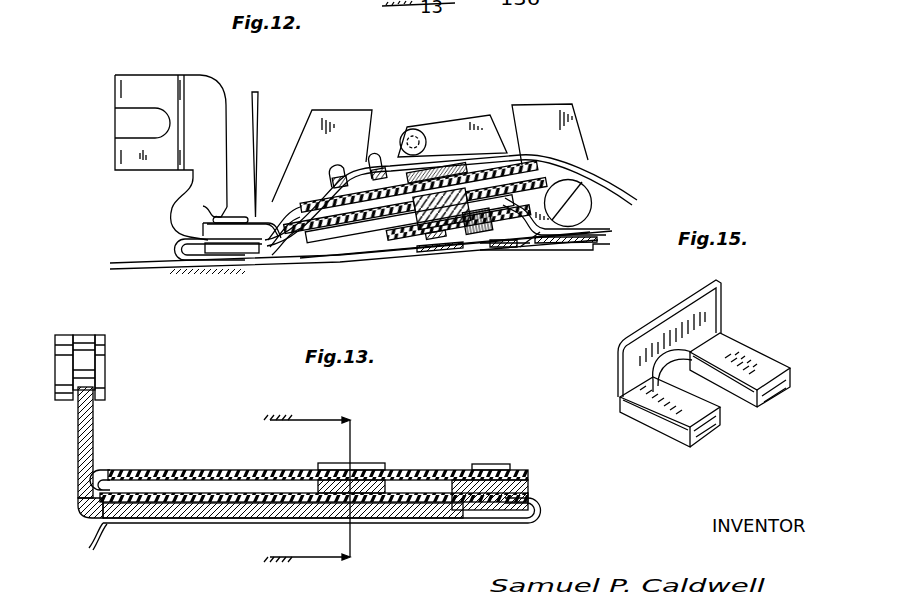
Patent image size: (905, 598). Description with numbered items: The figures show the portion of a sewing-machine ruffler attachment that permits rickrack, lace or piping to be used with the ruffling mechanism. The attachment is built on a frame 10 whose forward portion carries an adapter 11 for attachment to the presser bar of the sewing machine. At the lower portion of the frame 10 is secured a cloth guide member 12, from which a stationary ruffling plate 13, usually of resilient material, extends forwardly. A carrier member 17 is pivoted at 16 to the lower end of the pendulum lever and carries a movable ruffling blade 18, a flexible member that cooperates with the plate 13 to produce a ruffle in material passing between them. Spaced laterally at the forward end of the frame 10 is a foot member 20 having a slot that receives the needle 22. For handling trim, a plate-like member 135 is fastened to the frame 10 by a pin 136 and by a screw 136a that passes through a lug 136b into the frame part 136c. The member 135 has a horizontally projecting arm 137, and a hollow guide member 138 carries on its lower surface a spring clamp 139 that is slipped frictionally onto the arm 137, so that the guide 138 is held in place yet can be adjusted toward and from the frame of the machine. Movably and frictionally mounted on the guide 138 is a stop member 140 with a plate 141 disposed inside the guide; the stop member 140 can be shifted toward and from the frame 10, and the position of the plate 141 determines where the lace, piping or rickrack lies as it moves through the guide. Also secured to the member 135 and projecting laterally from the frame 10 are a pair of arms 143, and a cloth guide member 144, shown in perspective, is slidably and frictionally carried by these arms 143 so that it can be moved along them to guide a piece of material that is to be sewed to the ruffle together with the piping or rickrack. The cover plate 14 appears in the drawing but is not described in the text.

In FIG. 12, the frame 10 is at (335, 118).
In FIG. 12, the adapter 11 is at (127, 94).
In FIG. 12, the cloth guide member 12 is at (593, 249).
In FIG. 12, the stationary ruffling plate 13 is at (388, 249).
In FIG. 12, the cover plate 14 is at (563, 125).
In FIG. 13, the cover plate 14 is at (307, 491).
In FIG. 12, the pivot 16 is at (580, 207).
In FIG. 12, the carrier member 17 is at (187, 226).
In FIG. 12, the movable ruffling blade 18 is at (343, 249).
In FIG. 12, the foot member 20 is at (175, 250).
In FIG. 12, the needle 22 is at (258, 150).
In FIG. 12, the plate-like member 135 is at (445, 124).
In FIG. 13, the plate-like member 135 is at (93, 434).
In FIG. 12, the pin 136 is at (410, 129).
In FIG. 13, the pin 136 is at (88, 366).
In FIG. 12, the screw 136a is at (227, 207).
In FIG. 12, the lug 136b is at (213, 233).
In FIG. 12, the frame part 136c is at (223, 246).
In FIG. 12, the horizontally projecting arm 137 is at (417, 221).
In FIG. 13, the horizontally projecting arm 137 is at (193, 511).
In FIG. 12, the hollow guide member 138 is at (513, 160).
In FIG. 13, the hollow guide member 138 is at (431, 470).
In FIG. 12, the spring clamp 139 is at (421, 244).
In FIG. 13, the spring clamp 139 is at (505, 527).
In FIG. 13, the stop member 140 is at (362, 466).
In FIG. 13, the plate 141 is at (376, 484).
In FIG. 12, the arms 143 is at (342, 146).
In FIG. 12, the cloth guide member 144 is at (408, 127).
In FIG. 15, the cloth guide member 144 is at (708, 318).